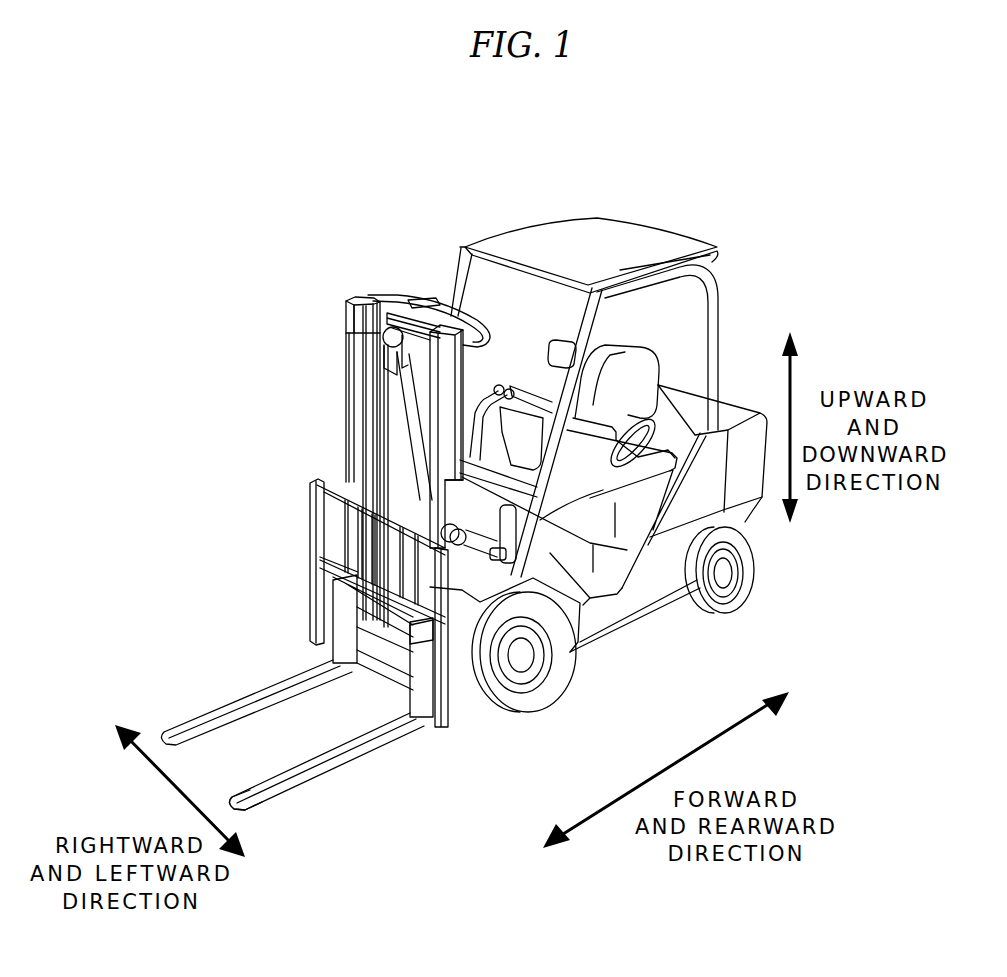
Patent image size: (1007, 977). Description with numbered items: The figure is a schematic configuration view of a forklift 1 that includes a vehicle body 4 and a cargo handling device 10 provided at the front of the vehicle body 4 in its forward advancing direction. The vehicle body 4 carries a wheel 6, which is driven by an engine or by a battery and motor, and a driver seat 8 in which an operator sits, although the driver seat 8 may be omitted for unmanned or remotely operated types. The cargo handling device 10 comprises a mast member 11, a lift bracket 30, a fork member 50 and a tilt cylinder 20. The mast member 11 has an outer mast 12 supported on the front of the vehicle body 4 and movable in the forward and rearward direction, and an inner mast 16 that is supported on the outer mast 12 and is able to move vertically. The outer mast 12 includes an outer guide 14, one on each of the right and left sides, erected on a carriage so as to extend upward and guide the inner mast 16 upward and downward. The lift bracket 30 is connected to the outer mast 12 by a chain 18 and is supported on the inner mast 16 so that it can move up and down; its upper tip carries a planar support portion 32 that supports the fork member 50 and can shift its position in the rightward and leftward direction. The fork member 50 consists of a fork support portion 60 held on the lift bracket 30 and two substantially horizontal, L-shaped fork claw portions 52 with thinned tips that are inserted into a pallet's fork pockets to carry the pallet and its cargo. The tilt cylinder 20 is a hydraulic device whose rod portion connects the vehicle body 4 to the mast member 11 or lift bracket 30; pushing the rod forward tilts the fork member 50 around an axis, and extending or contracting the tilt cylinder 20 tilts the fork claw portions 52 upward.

The forklift 1 is at (768, 147).
The vehicle body 4 is at (587, 250).
The wheel 6 is at (540, 683).
The driver seat 8 is at (630, 363).
The cargo handling device 10 is at (350, 420).
The mast member 11 is at (410, 300).
The outer mast 12 is at (360, 300).
The outer guide 14 is at (350, 343).
The inner mast 16 is at (398, 303).
The chain 18 is at (388, 453).
The tilt cylinder 20 is at (495, 540).
The lift bracket 30 is at (357, 602).
The support portion 32 is at (367, 585).
The fork member 50 is at (400, 727).
The fork claw portion 52 is at (277, 800).
The fork support portion 60 is at (434, 625).